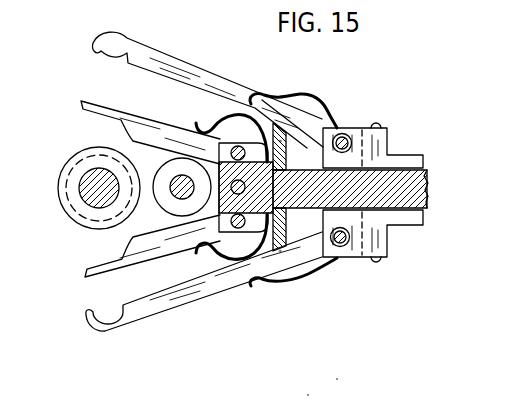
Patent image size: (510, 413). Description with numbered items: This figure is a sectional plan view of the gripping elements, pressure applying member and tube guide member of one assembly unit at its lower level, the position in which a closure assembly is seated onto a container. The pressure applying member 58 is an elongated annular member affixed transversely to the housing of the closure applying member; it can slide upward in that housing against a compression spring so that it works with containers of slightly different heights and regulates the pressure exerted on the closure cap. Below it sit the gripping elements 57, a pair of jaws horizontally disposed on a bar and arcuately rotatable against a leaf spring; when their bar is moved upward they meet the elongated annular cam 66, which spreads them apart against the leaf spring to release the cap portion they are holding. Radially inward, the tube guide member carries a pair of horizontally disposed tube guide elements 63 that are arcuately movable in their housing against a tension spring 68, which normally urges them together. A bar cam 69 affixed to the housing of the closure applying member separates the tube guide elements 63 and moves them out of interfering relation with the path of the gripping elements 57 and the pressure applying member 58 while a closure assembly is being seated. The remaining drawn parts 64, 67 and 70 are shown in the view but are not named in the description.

The gripping elements 57 is at (82, 104).
The pressure applying member 58 is at (58, 205).
The tube guide elements 63 is at (154, 58).
The bracket block 64 is at (388, 141).
The cam 66 is at (173, 199).
The roller pin 67 is at (187, 206).
The tension spring 68 is at (295, 97).
The bar cam 69 is at (272, 138).
The pivot 70 is at (291, 148).